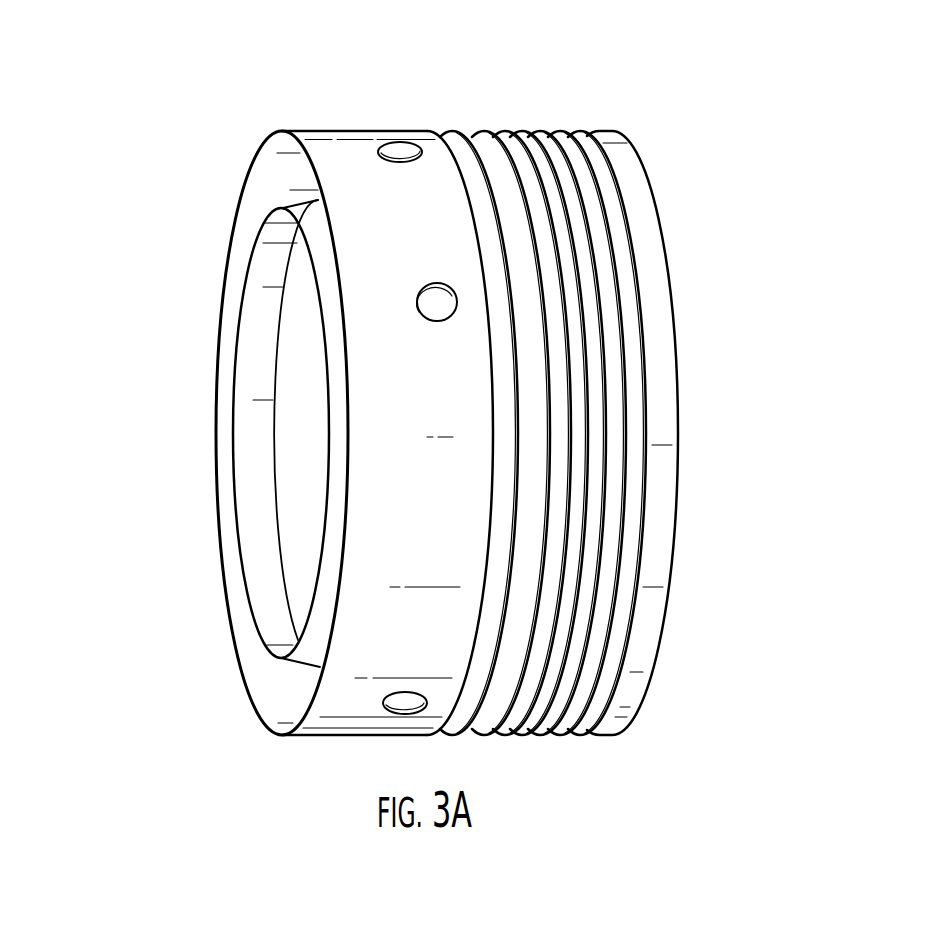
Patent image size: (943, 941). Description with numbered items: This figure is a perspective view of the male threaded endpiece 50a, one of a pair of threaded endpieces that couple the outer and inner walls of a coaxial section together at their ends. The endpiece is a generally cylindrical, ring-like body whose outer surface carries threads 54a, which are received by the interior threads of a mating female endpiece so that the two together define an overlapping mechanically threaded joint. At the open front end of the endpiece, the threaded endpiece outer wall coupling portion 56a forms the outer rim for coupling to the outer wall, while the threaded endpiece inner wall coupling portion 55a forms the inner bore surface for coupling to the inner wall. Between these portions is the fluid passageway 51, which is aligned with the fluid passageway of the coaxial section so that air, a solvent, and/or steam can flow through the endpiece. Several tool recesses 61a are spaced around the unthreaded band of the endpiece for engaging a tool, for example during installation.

The male threaded endpiece 50a is at (195, 185).
The fluid passageway 51 is at (268, 146).
The threads 54a is at (522, 137).
The threaded endpiece inner wall coupling portion 55a is at (262, 626).
The threaded endpiece outer wall coupling portion 56a is at (235, 262).
The tool recess 61a is at (418, 308).